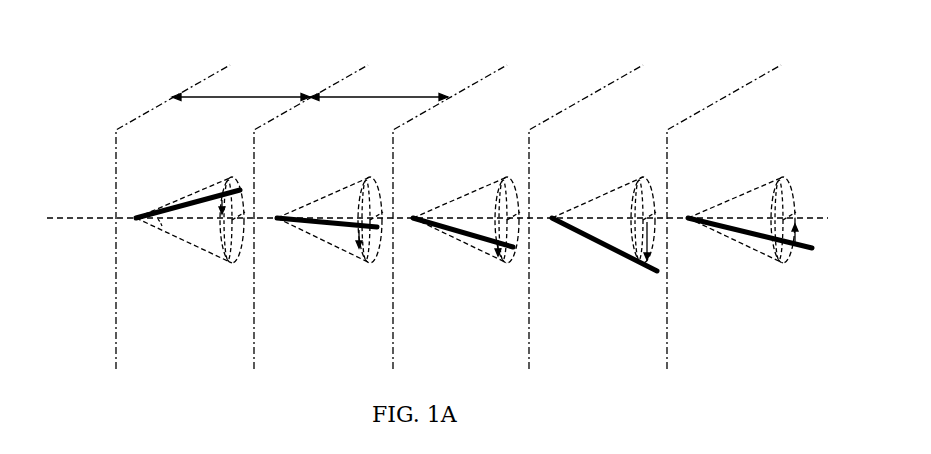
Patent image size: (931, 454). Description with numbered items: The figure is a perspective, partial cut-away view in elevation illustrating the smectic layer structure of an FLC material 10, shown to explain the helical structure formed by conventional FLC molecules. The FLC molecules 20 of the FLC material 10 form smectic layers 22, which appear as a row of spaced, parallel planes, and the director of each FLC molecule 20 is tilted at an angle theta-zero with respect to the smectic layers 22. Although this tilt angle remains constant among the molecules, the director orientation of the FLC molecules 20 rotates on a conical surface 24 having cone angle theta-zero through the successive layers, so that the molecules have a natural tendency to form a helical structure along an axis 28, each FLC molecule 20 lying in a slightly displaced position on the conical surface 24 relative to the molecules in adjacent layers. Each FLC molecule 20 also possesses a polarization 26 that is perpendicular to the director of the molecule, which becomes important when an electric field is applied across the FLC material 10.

The FLC material 10 is at (125, 43).
The FLC molecule 20 is at (198, 192).
The smectic layer 22 is at (243, 97).
The conical surface 24 is at (208, 253).
The polarization 26 is at (498, 260).
The axis 28 is at (100, 218).